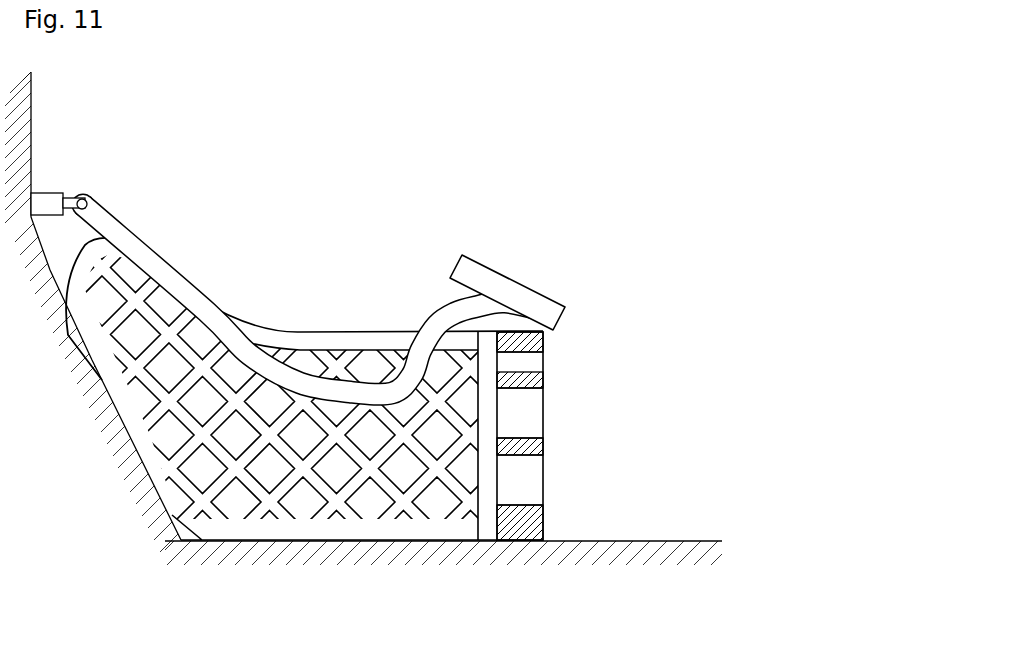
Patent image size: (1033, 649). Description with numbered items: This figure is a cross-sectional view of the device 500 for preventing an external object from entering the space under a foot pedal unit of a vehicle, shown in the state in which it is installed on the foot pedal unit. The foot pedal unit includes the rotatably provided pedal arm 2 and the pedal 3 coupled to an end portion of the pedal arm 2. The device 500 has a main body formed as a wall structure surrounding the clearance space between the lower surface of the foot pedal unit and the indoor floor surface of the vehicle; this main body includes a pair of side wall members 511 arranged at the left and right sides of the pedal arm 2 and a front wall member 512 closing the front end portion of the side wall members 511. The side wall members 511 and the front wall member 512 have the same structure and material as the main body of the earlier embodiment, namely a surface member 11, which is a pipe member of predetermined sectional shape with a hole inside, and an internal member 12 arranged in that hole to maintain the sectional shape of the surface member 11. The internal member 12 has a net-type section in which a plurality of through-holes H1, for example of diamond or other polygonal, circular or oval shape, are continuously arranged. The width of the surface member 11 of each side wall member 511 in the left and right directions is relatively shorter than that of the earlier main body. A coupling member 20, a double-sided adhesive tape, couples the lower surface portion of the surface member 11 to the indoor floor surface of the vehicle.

The device for preventing an external object from entering a space under a foot peda 500 is at (148, 163).
The side wall member 511 is at (273, 320).
The front wall member 512 is at (368, 363).
The surface member 11 is at (541, 342).
The internal member 12 is at (527, 450).
The pedal arm 2 is at (365, 392).
The pedal 3 is at (486, 276).
The coupling member 20 is at (358, 548).
The through-hole H1 is at (530, 413).